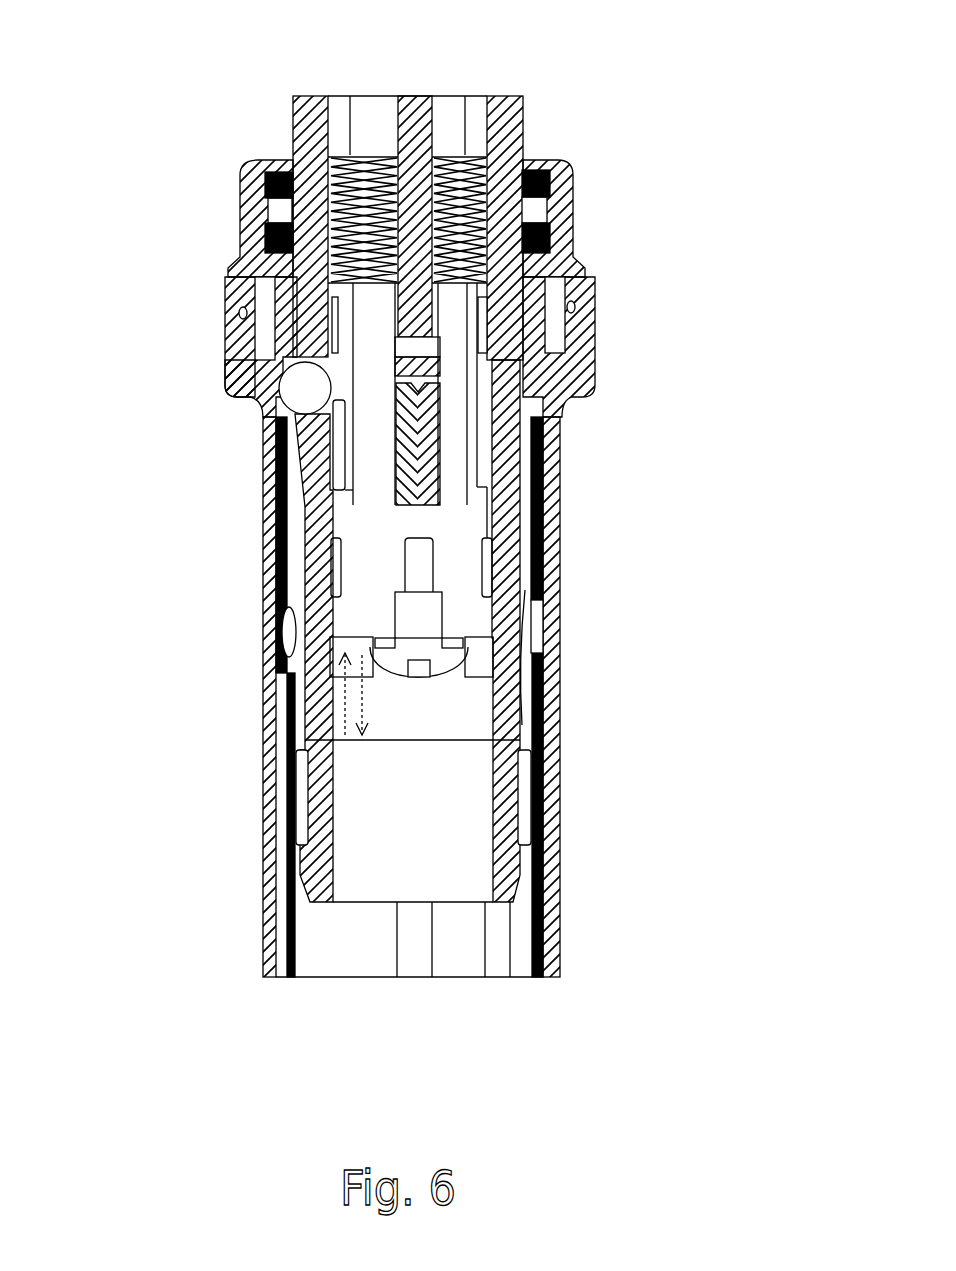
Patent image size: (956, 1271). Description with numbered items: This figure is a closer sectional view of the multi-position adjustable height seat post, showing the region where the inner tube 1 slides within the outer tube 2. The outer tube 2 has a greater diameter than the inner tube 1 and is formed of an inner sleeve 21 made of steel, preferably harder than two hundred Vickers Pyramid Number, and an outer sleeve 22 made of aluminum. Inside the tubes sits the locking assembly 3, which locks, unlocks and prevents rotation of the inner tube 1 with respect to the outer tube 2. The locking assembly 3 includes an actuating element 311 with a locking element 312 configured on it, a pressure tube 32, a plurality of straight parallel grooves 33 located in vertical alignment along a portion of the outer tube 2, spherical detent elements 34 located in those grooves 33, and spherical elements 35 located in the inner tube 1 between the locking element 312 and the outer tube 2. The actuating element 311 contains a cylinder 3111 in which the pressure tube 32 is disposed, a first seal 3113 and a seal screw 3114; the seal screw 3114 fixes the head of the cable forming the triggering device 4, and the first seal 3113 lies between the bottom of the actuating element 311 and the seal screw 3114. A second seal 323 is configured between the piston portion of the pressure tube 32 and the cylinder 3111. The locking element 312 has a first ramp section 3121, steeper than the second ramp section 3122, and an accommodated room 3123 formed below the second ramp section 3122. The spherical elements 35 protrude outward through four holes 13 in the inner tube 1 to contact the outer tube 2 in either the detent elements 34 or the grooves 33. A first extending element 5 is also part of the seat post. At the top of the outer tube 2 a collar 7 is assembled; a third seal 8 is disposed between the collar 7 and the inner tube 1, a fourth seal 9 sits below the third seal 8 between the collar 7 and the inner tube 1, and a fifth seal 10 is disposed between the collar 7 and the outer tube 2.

The inner tube 1 is at (510, 115).
The outer tube 2 is at (562, 523).
The locking assembly 3 is at (497, 360).
The triggering device 4 is at (430, 480).
The first extending element 5 is at (527, 165).
The collar 7 is at (260, 220).
The third seal 8 is at (258, 172).
The fourth seal 9 is at (262, 238).
The fifth seal 10 is at (238, 305).
The holes 13 is at (300, 388).
The inner sleeve 21 is at (532, 617).
The outer sleeve 22 is at (550, 560).
The pressure tube 32 is at (423, 142).
The straight parallel grooves 33 is at (417, 945).
The spherical detent elements 34 is at (275, 410).
The spherical elements 35 is at (243, 378).
The actuating element 311 is at (457, 312).
The locking element 312 is at (432, 358).
The second seal 323 is at (576, 305).
The cylinder 3111 is at (420, 455).
The first seal 3113 is at (437, 667).
The seal screw 3114 is at (470, 660).
The first ramp section 3121 is at (485, 405).
The second ramp section 3122 is at (437, 420).
The accommodated room 3123 is at (340, 465).